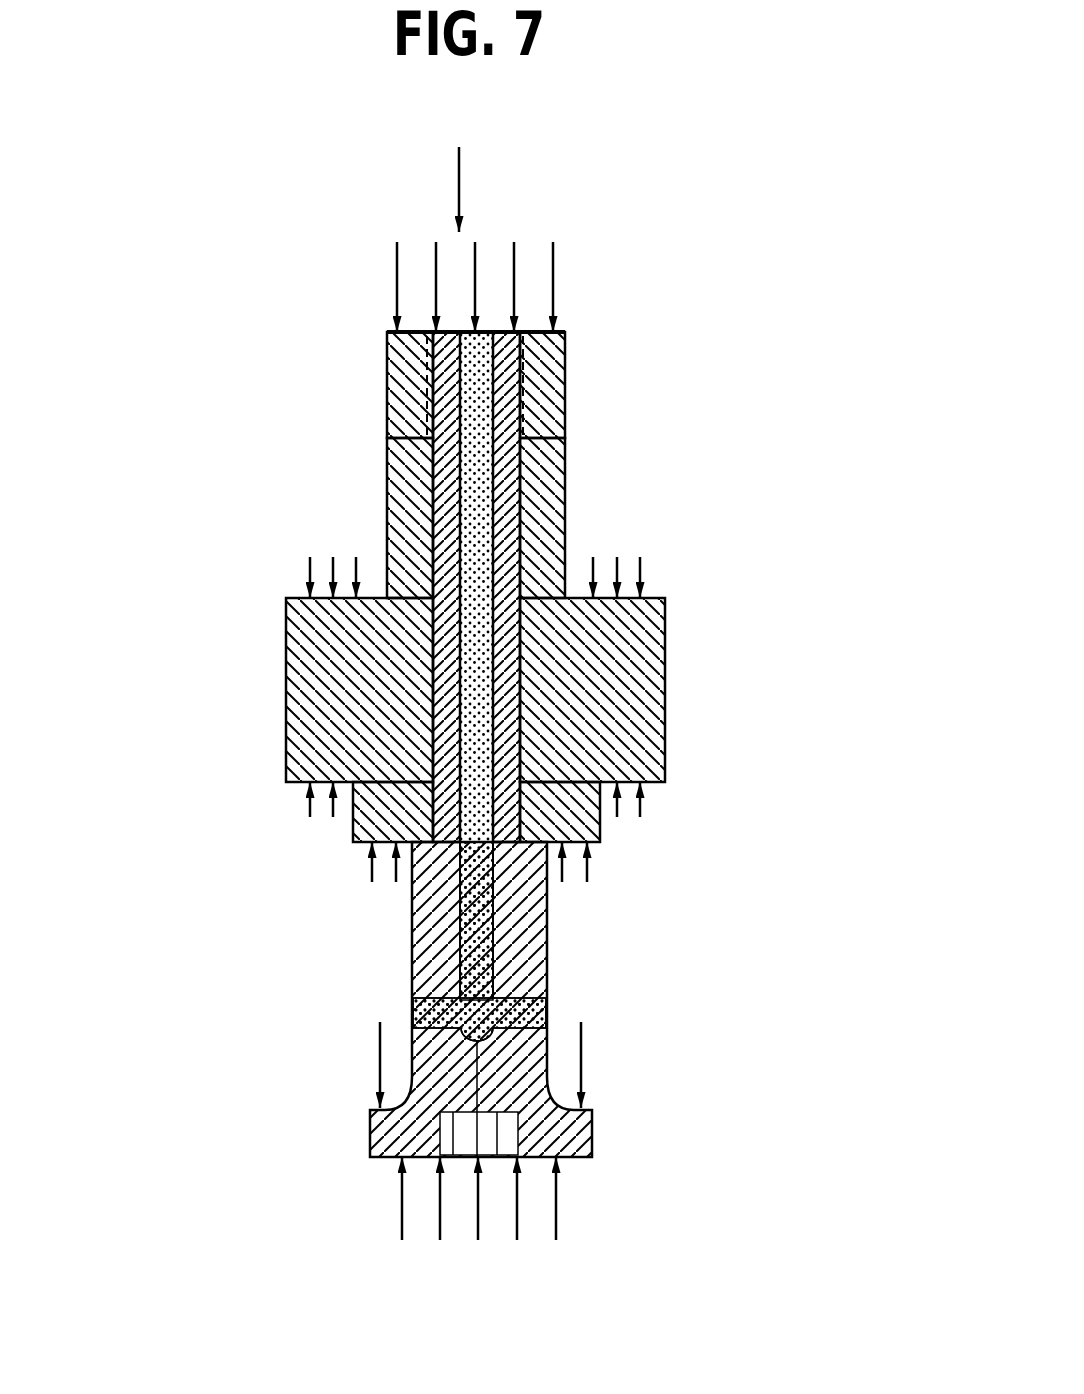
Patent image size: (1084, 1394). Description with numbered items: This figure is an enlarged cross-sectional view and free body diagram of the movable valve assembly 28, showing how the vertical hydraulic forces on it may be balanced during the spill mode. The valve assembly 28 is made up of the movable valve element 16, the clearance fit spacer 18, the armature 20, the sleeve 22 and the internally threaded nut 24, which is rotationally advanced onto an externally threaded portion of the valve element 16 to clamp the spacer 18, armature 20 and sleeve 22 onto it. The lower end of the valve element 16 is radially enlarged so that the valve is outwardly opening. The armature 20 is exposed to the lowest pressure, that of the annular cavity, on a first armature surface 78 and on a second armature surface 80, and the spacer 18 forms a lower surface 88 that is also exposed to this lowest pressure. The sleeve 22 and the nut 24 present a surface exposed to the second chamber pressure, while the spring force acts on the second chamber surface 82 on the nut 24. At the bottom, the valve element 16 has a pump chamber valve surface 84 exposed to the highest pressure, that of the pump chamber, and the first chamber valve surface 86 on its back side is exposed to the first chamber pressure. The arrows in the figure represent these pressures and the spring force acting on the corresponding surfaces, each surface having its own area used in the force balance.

The movable valve element 16 is at (540, 948).
The clearance fit spacer 18 is at (577, 825).
The armature 20 is at (642, 720).
The sleeve 22 is at (553, 497).
The internally threaded nut 24 is at (555, 365).
The valve assembly 28 is at (256, 422).
The first armature surface 78 is at (648, 560).
The second armature surface 80 is at (650, 812).
The second chamber surface 82 is at (388, 330).
The pump chamber valve surface 84 is at (552, 1158).
The first chamber valve surface 86 is at (578, 1088).
The lower surface of spacer 88 is at (357, 847).